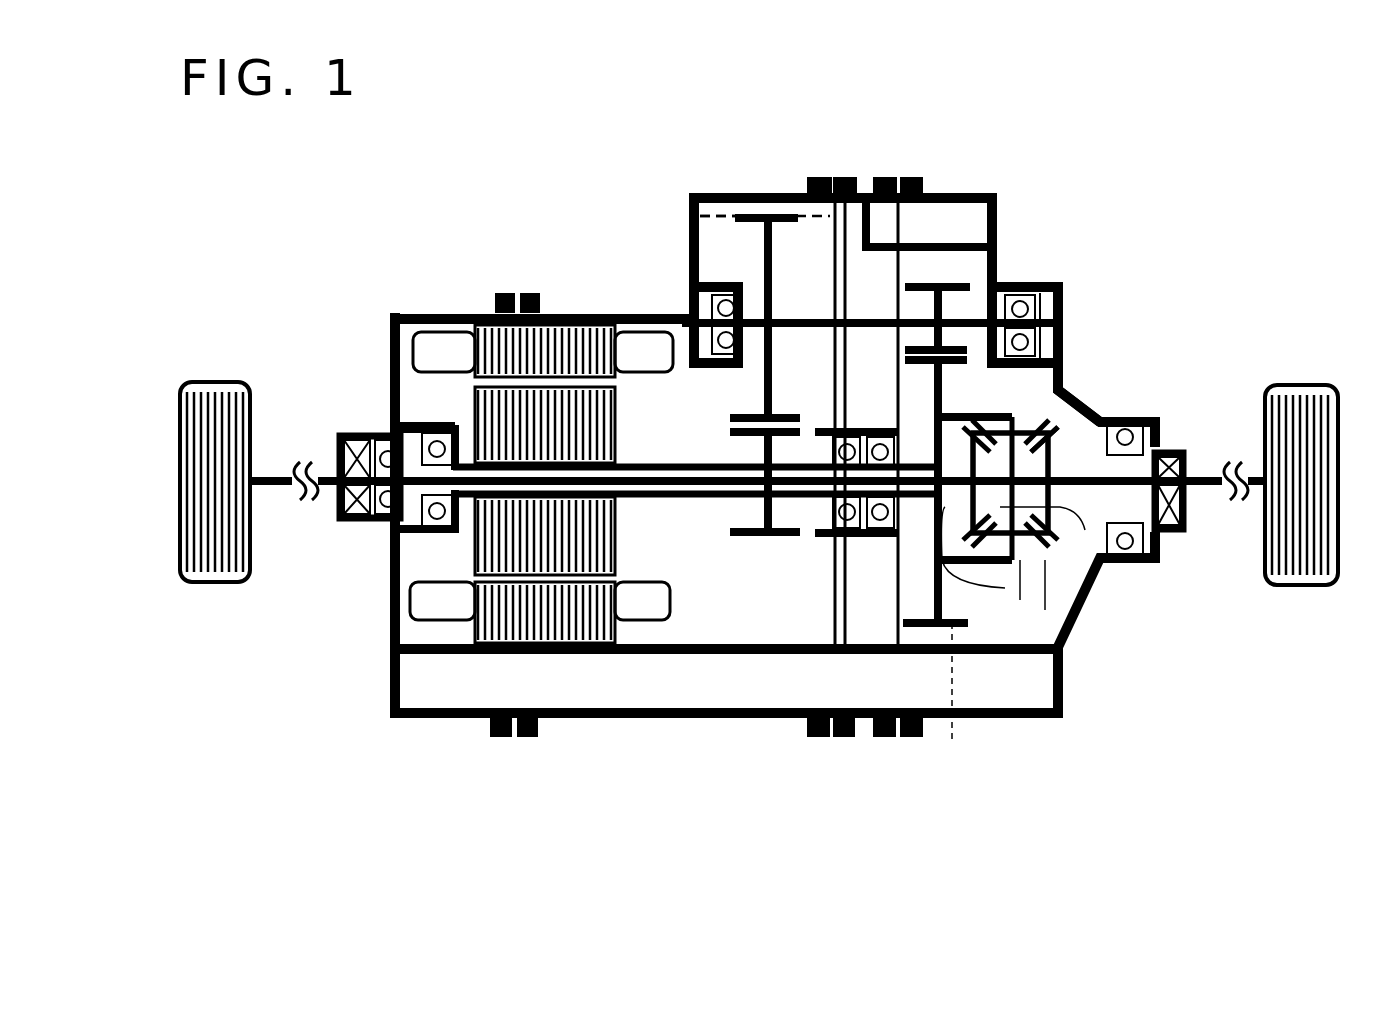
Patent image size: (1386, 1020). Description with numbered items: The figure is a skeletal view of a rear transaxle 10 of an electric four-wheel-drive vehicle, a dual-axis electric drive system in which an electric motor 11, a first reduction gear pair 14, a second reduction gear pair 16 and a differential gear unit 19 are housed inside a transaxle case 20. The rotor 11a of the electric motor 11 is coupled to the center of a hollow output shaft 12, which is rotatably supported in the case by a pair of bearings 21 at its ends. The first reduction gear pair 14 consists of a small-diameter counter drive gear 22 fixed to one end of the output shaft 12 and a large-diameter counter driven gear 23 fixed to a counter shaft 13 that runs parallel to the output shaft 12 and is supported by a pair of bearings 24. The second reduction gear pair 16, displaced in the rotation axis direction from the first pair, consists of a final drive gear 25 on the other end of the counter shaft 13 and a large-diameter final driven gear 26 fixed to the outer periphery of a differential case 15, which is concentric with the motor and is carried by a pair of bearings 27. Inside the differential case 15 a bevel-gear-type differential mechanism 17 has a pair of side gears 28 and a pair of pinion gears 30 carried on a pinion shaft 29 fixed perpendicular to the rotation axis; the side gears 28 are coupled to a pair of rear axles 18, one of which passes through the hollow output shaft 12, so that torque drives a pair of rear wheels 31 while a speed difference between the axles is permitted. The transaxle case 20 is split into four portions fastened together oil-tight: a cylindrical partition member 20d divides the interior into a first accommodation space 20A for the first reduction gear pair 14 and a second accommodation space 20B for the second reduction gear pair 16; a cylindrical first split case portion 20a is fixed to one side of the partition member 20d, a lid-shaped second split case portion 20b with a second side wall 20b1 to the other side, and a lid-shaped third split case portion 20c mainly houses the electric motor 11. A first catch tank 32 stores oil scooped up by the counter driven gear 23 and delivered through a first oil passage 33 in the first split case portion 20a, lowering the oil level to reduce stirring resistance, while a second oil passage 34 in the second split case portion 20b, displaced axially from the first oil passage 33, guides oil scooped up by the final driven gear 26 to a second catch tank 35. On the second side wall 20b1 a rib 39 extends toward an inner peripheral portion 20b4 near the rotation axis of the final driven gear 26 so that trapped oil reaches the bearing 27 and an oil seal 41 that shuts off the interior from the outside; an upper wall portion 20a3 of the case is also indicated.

The rear transaxle 10 is at (1152, 252).
The electric motor 11 is at (468, 410).
The rotor 11a is at (472, 535).
The output shaft 12 is at (690, 495).
The counter shaft 13 is at (768, 245).
The first reduction gear pair 14 is at (750, 275).
The differential case 15 is at (1062, 578).
The second reduction gear pair 16 is at (965, 345).
The differential mechanism 17 is at (1128, 418).
The rear axles 18 is at (283, 524).
The differential gear unit 19 is at (1088, 565).
The transaxle case 20 is at (520, 772).
The first accommodation space 20A is at (790, 720).
The second accommodation space 20B is at (945, 262).
The first split case portion 20a is at (590, 720).
The housing upper wall 20a3 is at (790, 235).
The second split case portion 20b is at (955, 720).
The second side wall 20b1 is at (1082, 410).
The inner peripheral portion 20b4 is at (1170, 415).
The third split case portion 20c is at (425, 720).
The partition member 20d is at (860, 740).
The bearings 21 is at (398, 425).
The counter drive gear 22 is at (752, 545).
The counter driven gear 23 is at (758, 215).
The bearings 24 is at (688, 292).
The final drive gear 25 is at (945, 300).
The final driven gear 26 is at (915, 720).
The bearings 27 is at (878, 430).
The side gears 28 is at (1152, 538).
The pinion shaft 29 is at (1020, 600).
The pinion gears 30 is at (1068, 362).
The rear wheels 31 is at (206, 585).
The first catch tank 32 is at (632, 652).
The first oil passage 33 is at (705, 186).
The second oil passage 34 is at (955, 745).
The second catch tank 35 is at (930, 218).
The rib 39 is at (1055, 465).
The oil seal 41 is at (1168, 445).